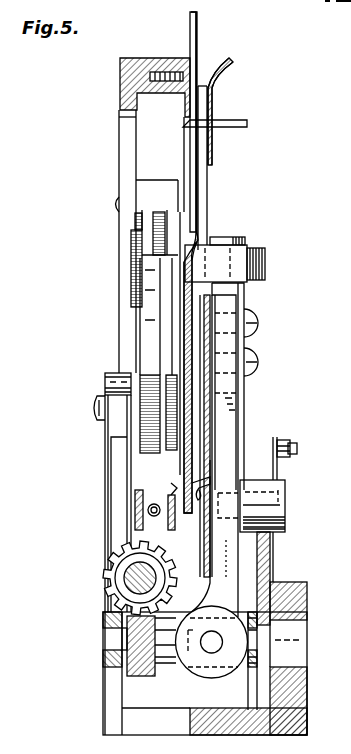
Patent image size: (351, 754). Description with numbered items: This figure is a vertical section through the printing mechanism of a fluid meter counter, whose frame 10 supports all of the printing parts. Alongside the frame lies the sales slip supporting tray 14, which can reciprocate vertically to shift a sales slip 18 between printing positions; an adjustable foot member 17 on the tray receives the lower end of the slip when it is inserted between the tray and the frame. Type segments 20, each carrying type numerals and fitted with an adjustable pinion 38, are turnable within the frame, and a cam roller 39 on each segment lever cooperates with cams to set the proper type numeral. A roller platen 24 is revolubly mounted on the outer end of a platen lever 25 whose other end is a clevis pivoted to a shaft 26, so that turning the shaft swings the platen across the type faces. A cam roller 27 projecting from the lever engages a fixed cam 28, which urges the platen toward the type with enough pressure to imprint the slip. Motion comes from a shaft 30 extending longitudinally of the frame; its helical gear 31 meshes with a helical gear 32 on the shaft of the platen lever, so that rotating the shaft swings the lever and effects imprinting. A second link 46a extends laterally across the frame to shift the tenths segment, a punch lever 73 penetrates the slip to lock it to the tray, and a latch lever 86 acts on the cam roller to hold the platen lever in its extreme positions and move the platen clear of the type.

The frame 10 is at (120, 79).
The sales slip supporting tray 14 is at (228, 72).
The foot member 17 is at (203, 485).
The sales slip 18 is at (198, 22).
The type segments 20 is at (150, 331).
The roller platen 24 is at (265, 262).
The platen lever 25 is at (230, 414).
The shaft 26 is at (250, 668).
The cam roller 27 is at (282, 481).
The fixed cam 28 is at (268, 548).
The shaft 30 is at (136, 582).
The helical gear 31 is at (122, 573).
The helical gear 32 is at (140, 668).
The pinion 38 is at (162, 216).
The cam roller 39 is at (115, 375).
The second link 46a is at (180, 474).
The punch lever 73 is at (245, 124).
The latch lever 86 is at (280, 473).